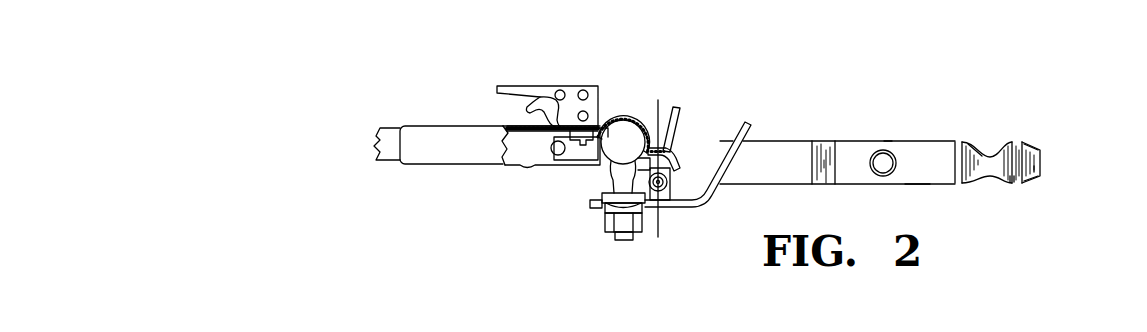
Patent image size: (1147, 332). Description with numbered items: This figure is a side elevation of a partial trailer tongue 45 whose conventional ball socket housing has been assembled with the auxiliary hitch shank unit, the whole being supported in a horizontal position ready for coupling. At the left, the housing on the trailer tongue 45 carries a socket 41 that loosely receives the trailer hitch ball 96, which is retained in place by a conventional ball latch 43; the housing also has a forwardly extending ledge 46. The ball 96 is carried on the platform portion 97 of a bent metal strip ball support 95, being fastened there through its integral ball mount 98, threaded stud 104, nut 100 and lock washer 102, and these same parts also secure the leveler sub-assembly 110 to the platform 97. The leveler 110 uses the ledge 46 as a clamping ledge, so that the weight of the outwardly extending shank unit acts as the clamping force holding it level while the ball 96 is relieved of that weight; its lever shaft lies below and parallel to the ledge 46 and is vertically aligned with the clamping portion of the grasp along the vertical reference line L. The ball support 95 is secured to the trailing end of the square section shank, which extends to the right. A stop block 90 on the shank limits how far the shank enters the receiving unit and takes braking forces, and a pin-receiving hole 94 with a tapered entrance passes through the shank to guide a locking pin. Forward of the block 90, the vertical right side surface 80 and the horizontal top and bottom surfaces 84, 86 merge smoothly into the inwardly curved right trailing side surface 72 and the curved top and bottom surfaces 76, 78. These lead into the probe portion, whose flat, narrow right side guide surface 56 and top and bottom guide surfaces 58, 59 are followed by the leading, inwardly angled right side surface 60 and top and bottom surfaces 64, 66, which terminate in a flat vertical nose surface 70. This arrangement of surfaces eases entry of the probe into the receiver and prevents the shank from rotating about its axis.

The socket 41 is at (627, 133).
The ball latch 43 is at (570, 93).
The trailer tongue 45 is at (384, 155).
The forwardly extending ledge 46 is at (617, 186).
The right side guide surface 56 is at (1019, 179).
The top guide surface 58 is at (1014, 141).
The bottom guide surface 59 is at (1015, 178).
The leading right side surface 60 is at (1035, 170).
The leading top surface 64 is at (1028, 145).
The leading bottom surface 66 is at (1036, 181).
The nose surface 70 is at (1040, 158).
The right trailing side surface 72 is at (978, 140).
The top curved side surface 76 is at (988, 153).
The bottom curved side surface 78 is at (976, 160).
The right side surface 80 is at (903, 178).
The top surface 84 is at (888, 141).
The bottom surface 86 is at (925, 185).
The stop block 90 is at (818, 185).
The pin-receiving hole 94 is at (877, 171).
The ball support 95 is at (712, 198).
The trailer hitch ball 96 is at (657, 100).
The platform portion 97 is at (667, 207).
The ball mount 98 is at (601, 184).
The nut 100 is at (641, 214).
The lock washer 102 is at (599, 210).
The threaded stud 104 is at (625, 240).
The leveler sub-assembly 110 is at (686, 141).
The vertical reference line L is at (659, 103).